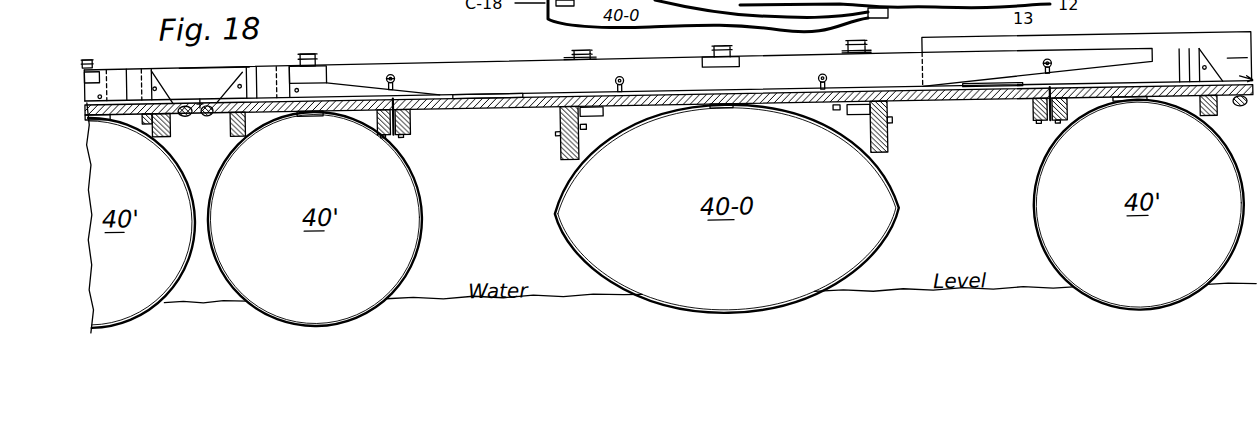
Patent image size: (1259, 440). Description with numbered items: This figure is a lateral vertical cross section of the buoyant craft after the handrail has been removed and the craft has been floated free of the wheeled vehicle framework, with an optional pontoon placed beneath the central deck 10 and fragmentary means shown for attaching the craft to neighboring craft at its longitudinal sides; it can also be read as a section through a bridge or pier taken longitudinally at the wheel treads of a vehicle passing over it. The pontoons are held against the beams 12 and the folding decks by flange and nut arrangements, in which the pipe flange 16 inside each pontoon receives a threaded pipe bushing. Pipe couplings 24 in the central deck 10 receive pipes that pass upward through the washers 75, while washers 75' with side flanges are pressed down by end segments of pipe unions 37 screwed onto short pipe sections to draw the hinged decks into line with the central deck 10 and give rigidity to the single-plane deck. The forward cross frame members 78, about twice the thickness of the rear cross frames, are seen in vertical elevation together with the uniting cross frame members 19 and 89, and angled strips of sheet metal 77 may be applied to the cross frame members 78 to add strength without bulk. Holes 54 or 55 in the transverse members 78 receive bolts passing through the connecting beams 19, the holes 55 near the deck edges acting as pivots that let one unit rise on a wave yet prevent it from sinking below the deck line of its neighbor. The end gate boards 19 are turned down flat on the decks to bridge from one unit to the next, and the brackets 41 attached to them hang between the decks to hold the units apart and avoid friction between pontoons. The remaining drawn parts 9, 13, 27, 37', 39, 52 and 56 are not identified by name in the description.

The hull support post 9 is at (544, 147).
The central deck 10 is at (509, 120).
The beam 12 is at (676, 115).
The bearing block with pin 13 is at (720, 112).
The pipe flange 16 is at (1144, 123).
The end gate board 19 is at (457, 93).
The pipe coupling 24 is at (603, 121).
The eye bolt 27 is at (710, 72).
The pipe union 37 is at (721, 46).
The cap bolt 37' is at (202, 53).
The pin 39 is at (211, 128).
The bracket 41 is at (722, 83).
The bolt 52 is at (586, 137).
The hole 54 is at (730, 65).
The hole 55 is at (158, 90).
The diagonal brace 56 is at (155, 76).
The washer 75 is at (717, 49).
The flanged washer 75' is at (219, 66).
The angled sheet metal strip 77 is at (721, 72).
The cross frame member 78 is at (661, 75).
The uniting cross frame member 89 is at (213, 66).